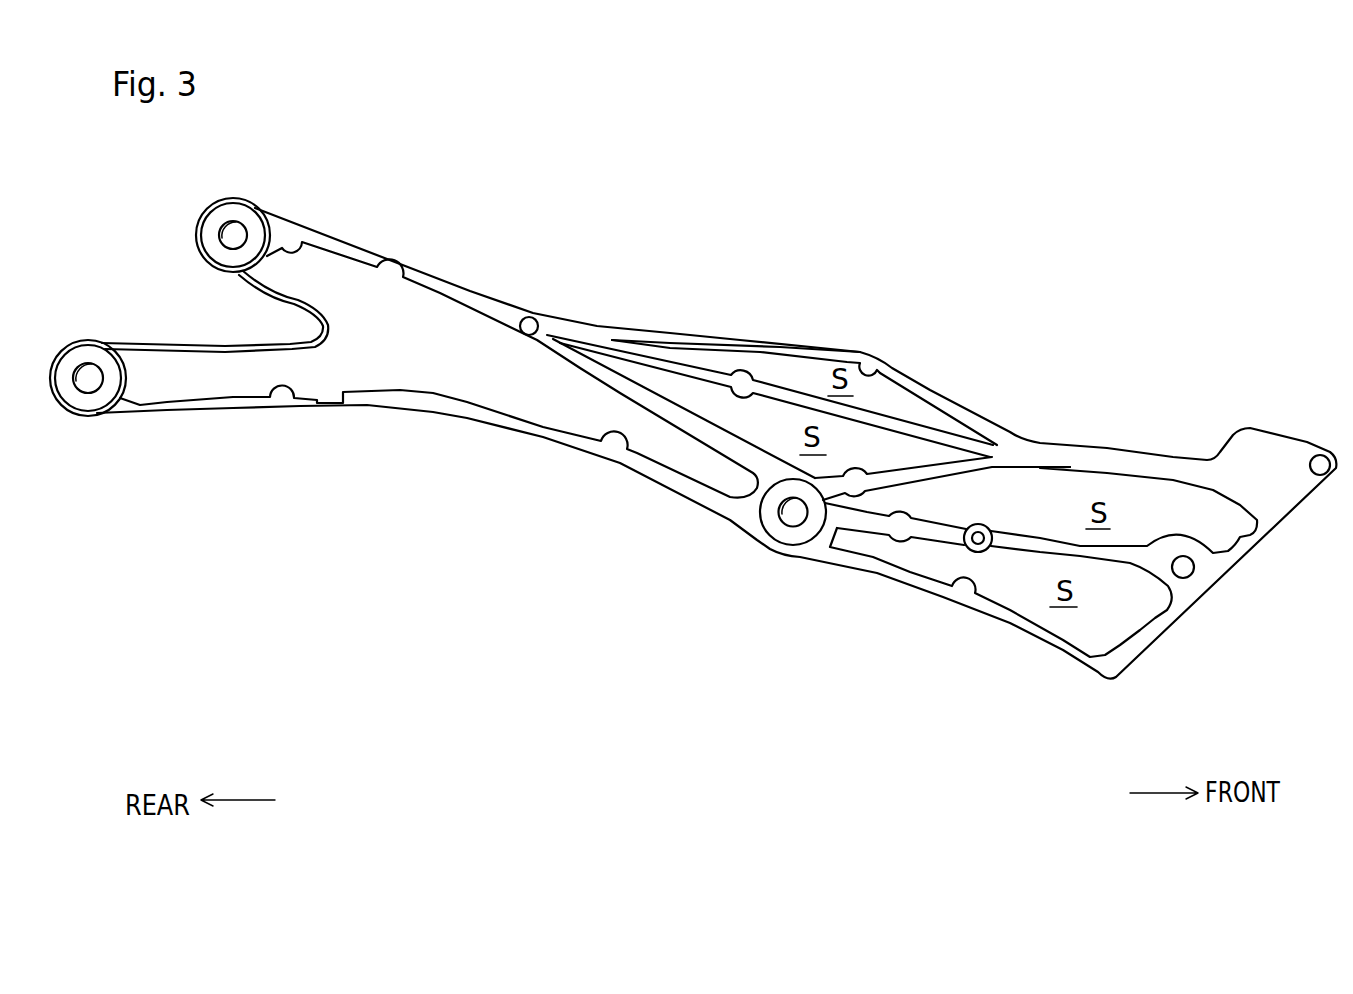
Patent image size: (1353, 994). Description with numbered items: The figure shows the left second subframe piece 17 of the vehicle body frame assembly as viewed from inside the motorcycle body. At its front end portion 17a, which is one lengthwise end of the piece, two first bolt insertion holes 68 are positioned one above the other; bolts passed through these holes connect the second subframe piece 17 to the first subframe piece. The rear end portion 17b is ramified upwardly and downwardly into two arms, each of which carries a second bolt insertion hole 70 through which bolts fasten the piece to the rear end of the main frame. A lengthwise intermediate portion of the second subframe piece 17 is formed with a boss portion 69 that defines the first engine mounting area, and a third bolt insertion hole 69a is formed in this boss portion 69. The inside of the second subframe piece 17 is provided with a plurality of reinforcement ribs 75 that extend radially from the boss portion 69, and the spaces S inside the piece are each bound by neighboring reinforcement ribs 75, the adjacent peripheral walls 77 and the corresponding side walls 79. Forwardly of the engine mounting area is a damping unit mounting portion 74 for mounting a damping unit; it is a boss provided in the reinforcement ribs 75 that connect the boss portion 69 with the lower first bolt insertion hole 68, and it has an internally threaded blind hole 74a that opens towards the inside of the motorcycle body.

The second subframe piece 17 is at (1040, 363).
The front end portion 17a is at (1090, 635).
The rear end portion 17b is at (350, 325).
The first bolt insertion holes 68 is at (1318, 478).
The boss portion 69 is at (800, 546).
The third bolt insertion hole 69a is at (788, 520).
The second bolt insertion holes 70 is at (240, 232).
The damping unit mounting portion 74 is at (980, 553).
The internally threaded blind hole 74a is at (987, 524).
The reinforcement ribs 75 is at (703, 365).
The peripheral walls 77 is at (902, 368).
The side walls 79 is at (785, 370).